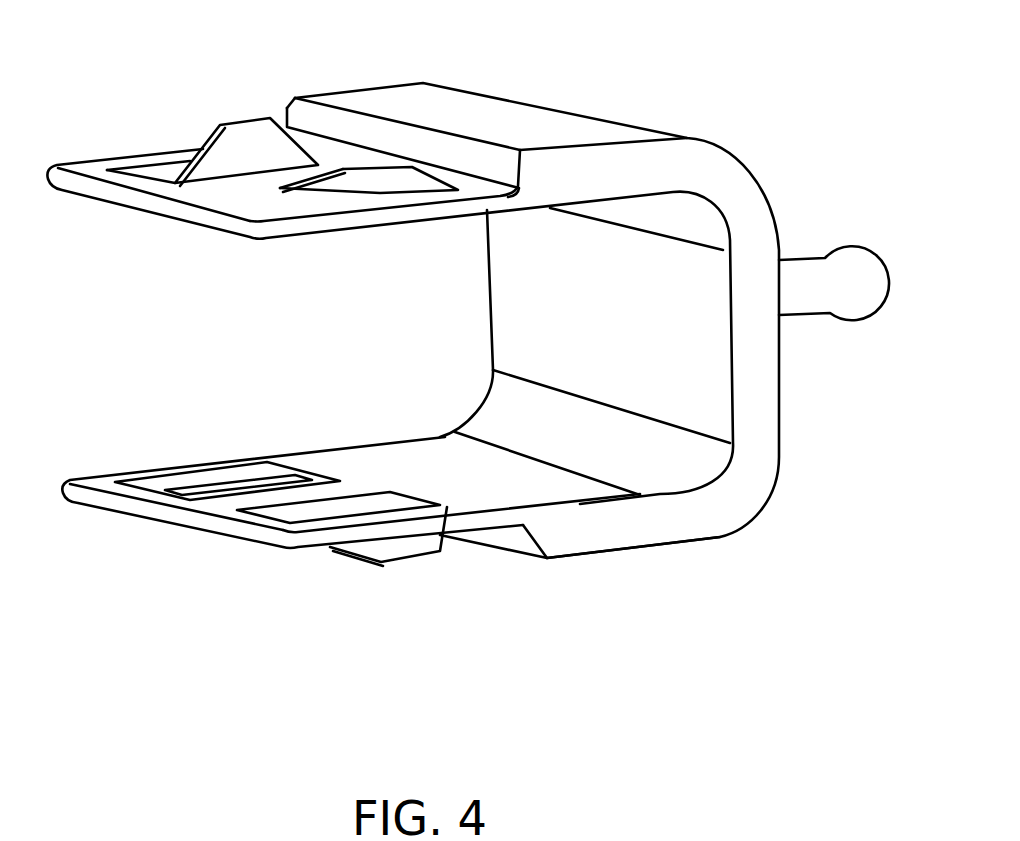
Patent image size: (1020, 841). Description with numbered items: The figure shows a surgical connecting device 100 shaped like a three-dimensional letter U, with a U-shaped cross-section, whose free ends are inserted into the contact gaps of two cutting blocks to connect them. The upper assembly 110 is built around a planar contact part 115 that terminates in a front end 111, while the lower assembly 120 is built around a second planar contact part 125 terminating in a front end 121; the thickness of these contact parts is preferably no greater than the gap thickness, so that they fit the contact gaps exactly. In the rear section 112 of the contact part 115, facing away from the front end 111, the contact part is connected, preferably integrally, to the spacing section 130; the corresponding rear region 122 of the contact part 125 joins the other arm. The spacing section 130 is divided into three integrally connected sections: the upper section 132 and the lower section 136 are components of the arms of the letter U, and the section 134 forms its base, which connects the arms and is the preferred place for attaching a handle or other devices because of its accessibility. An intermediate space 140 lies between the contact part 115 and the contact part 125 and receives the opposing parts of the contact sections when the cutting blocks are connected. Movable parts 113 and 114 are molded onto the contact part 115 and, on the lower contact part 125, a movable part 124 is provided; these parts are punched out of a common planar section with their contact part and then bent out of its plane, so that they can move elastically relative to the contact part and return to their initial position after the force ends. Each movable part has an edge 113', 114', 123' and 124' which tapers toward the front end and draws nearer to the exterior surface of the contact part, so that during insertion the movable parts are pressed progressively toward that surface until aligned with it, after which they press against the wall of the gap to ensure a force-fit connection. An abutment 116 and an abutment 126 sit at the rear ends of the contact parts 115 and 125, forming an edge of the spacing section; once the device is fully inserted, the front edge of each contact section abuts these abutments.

The surgical connecting device 100 is at (813, 97).
The top plate 110 is at (149, 138).
The front end 111 is at (108, 203).
The rear end section of contact part 112 is at (433, 177).
The movable part 113 is at (246, 103).
The tapering edge 113' is at (210, 93).
The movable part 114 is at (369, 114).
The tapering edge 114' is at (299, 242).
The contact part 115 is at (198, 192).
The abutment 116 is at (427, 150).
The bottom plate 120 is at (162, 533).
The front end 121 is at (120, 505).
The bottom plate tab 122 is at (467, 493).
The tapering edge 123' is at (191, 465).
The movable part 124 is at (345, 563).
The tapering edge 124' is at (349, 581).
The contact part 125 is at (230, 503).
The abutment 126 is at (507, 540).
The spacing section 130 is at (780, 198).
The arm section of spacing section 132 is at (595, 175).
The base section 134 is at (765, 370).
The arm section of spacing section 136 is at (800, 275).
The intermediate space 140 is at (230, 342).